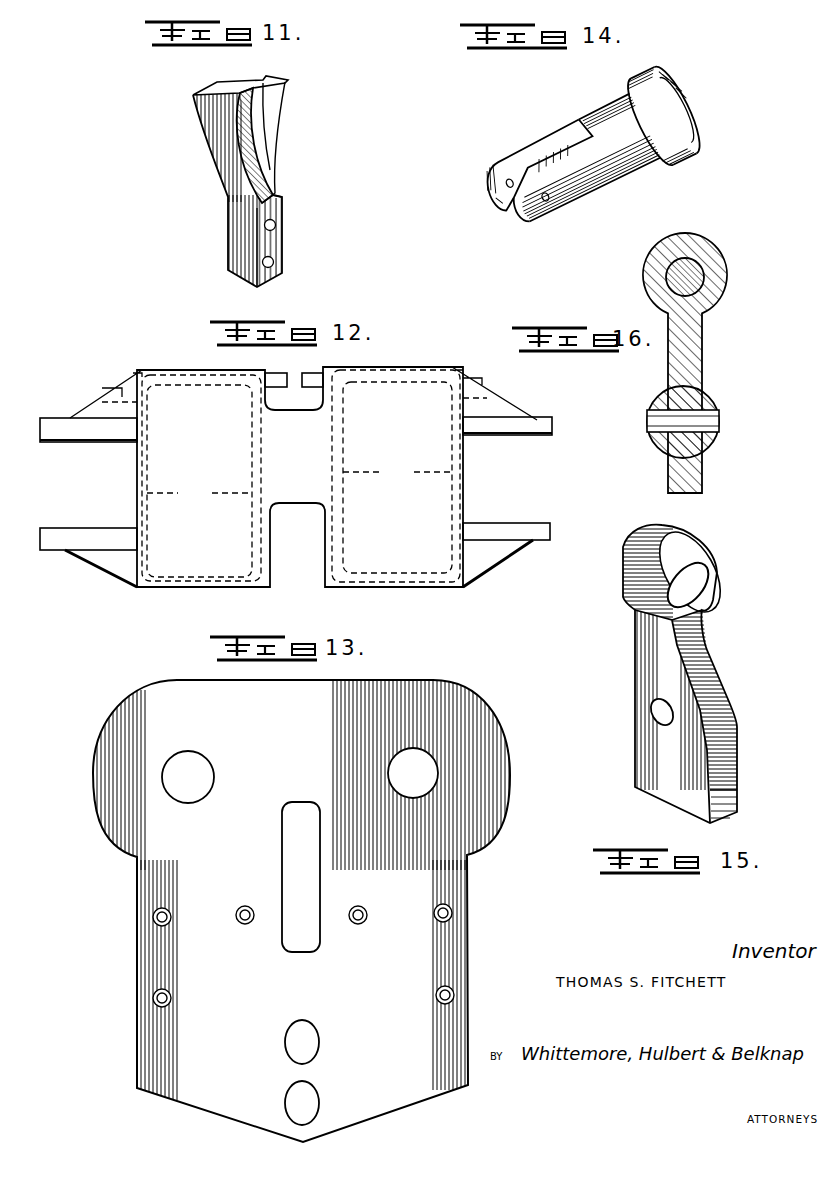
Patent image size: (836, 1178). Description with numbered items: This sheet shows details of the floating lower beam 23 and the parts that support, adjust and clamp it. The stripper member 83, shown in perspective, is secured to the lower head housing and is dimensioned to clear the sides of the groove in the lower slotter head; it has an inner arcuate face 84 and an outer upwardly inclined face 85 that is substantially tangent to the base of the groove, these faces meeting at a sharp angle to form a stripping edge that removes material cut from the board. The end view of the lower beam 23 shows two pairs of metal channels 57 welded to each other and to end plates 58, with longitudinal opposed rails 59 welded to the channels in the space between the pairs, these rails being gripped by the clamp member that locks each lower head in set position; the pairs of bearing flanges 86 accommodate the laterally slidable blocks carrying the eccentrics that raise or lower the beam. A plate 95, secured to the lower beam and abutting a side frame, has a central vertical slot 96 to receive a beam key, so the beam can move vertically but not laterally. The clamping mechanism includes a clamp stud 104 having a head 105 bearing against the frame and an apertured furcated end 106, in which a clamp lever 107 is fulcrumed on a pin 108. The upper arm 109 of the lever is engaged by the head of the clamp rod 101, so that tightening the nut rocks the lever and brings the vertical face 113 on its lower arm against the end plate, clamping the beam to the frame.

In FIG. 12, the floating lower beam 23 is at (167, 590).
In FIG. 12, the metal channels 57 is at (299, 479).
In FIG. 12, the end plates 58 is at (160, 508).
In FIG. 12, the longitudinal opposed rails 59 is at (318, 388).
In FIG. 12, the bearing flanges 86 is at (45, 432).
In FIG. 11, the stripper member 83 is at (218, 187).
In FIG. 11, the inner arcuate face 84 is at (236, 125).
In FIG. 11, the outer upwardly inclined face 85 is at (212, 85).
In FIG. 13, the plate 95 is at (447, 947).
In FIG. 13, the central vertical slot 96 is at (304, 799).
In FIG. 14, the clamp stud 104 is at (643, 158).
In FIG. 14, the head 105 is at (695, 128).
In FIG. 16, the head 105 is at (710, 403).
In FIG. 14, the apertured furcated end 106 is at (510, 215).
In FIG. 16, the clamp lever 107 is at (703, 347).
In FIG. 15, the clamp lever 107 is at (723, 667).
In FIG. 15, the upper arm 109 is at (642, 628).
In FIG. 15, the vertical face 113 is at (734, 800).
In FIG. 16, the clamp rod 101 is at (703, 272).
In FIG. 16, the pin 108 is at (717, 425).